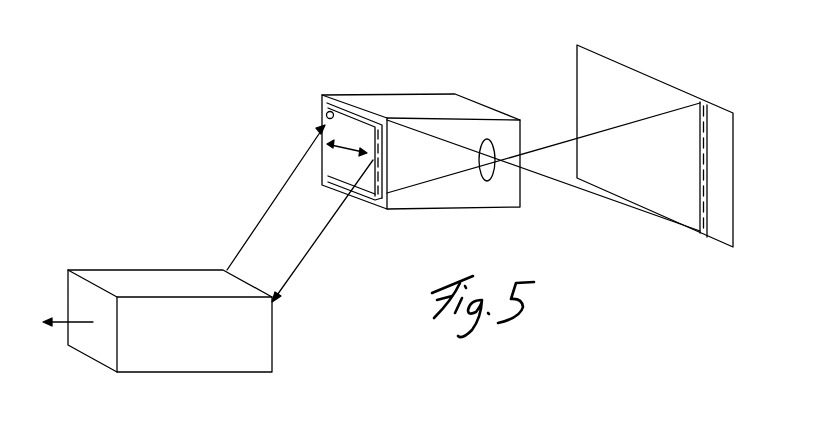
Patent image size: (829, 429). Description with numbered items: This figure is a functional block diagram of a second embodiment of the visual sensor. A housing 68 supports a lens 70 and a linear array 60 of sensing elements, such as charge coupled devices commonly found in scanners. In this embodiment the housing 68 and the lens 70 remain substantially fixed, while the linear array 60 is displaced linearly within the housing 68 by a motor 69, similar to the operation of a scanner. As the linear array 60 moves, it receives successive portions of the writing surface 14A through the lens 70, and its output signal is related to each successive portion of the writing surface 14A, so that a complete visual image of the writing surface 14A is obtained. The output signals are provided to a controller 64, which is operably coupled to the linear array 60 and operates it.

The housing 68 is at (463, 102).
The linear array 60 is at (374, 196).
The motor 69 is at (326, 116).
The lens 70 is at (495, 147).
The writing surface 14A is at (718, 233).
The controller 64 is at (190, 373).